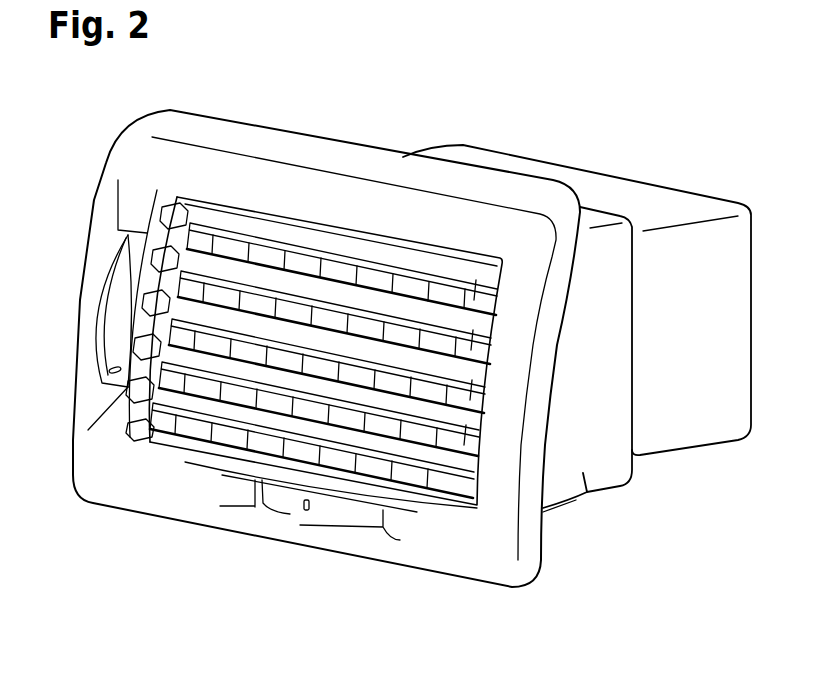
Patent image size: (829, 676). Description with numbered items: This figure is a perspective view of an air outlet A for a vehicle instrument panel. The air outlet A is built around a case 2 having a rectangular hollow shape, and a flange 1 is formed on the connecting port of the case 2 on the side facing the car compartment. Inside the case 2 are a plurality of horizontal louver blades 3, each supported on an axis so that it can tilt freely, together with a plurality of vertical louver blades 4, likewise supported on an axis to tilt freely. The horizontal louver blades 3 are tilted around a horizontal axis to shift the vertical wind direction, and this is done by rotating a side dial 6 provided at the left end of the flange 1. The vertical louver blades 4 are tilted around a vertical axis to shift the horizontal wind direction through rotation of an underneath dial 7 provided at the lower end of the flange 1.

The air outlet A is at (102, 135).
The flange 1 is at (212, 120).
The case 2 is at (558, 165).
The horizontal louver blades 3 is at (472, 380).
The vertical louver blades 4 is at (455, 293).
The side dial 6 is at (108, 317).
The underneath dial 7 is at (335, 512).